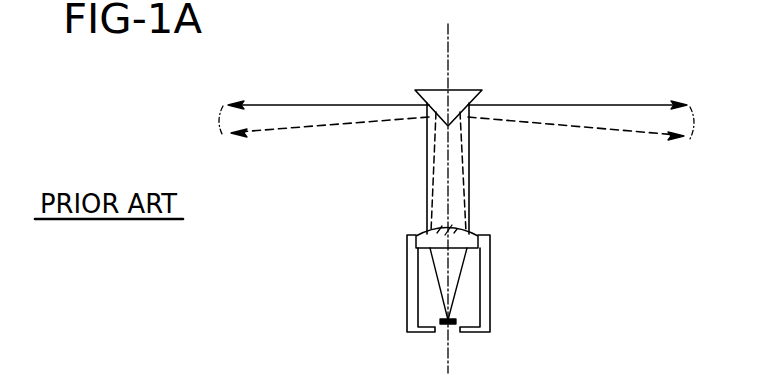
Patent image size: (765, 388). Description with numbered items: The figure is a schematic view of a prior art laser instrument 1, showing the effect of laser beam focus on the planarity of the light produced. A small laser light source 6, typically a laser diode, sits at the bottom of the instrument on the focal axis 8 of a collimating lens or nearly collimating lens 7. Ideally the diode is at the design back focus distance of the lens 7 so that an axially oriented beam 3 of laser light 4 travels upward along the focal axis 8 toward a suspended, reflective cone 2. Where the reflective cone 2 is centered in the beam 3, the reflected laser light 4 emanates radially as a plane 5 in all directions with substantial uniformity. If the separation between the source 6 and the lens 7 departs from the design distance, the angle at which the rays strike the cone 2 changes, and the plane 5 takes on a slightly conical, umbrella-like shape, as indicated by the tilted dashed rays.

The laser instrument 1 is at (308, 223).
The reflective cone 2 is at (460, 95).
The beam 3 is at (463, 190).
The laser light 4 is at (470, 145).
The plane of laser light 5 is at (293, 104).
The laser light source 6 is at (440, 322).
The collimating lens or nearly collimating lens 7 is at (478, 229).
The focal axis 8 is at (449, 362).